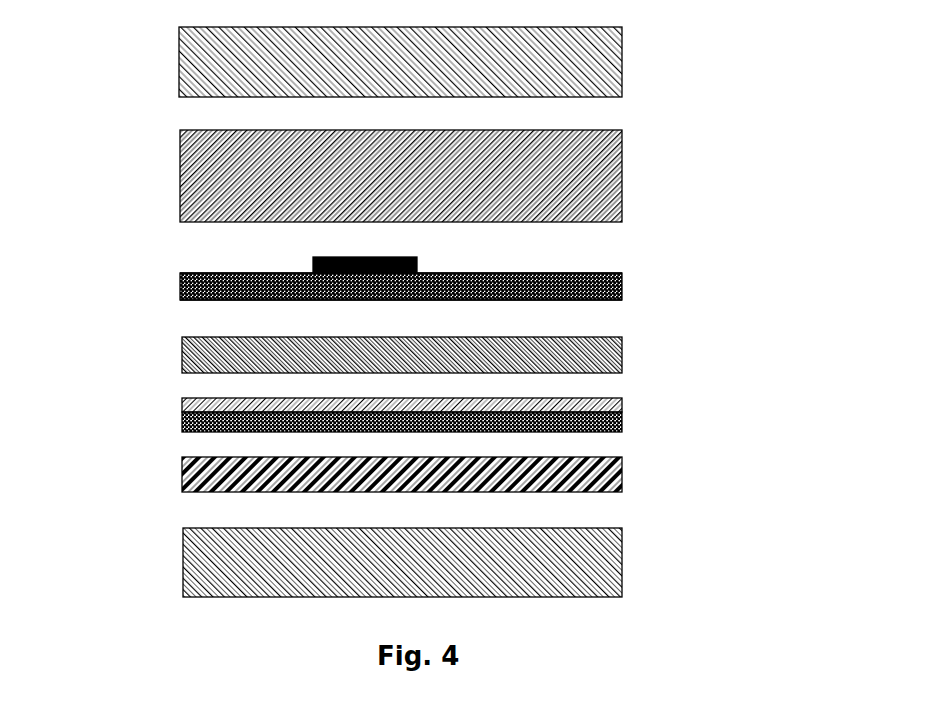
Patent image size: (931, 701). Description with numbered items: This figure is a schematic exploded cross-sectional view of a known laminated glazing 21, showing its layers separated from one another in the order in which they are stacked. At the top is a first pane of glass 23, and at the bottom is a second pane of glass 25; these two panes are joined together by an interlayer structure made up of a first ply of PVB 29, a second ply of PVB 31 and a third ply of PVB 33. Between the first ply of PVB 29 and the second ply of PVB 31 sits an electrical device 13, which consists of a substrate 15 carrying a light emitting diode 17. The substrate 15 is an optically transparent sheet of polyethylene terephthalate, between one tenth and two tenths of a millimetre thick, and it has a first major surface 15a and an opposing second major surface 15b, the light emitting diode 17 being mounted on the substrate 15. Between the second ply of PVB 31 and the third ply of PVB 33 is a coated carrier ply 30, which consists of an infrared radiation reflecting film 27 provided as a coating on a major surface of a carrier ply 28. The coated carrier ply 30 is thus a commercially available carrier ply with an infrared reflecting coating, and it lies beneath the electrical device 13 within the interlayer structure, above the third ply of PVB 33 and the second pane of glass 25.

The first pane of glass 23 is at (206, 64).
The first ply of PVB 29 is at (603, 170).
The light emitting diode 17 is at (313, 262).
The substrate 15 is at (183, 287).
The first major surface 15a is at (588, 272).
The second major surface 15b is at (588, 301).
The electrical device 13 is at (692, 250).
The second ply of PVB 31 is at (183, 350).
The infrared radiation reflecting film 27 is at (183, 407).
The carrier ply 28 is at (622, 432).
The coated carrier ply 30 is at (667, 411).
The third ply of PVB 33 is at (183, 476).
The second pane of glass 25 is at (622, 562).
The laminated glazing 21 is at (757, 445).